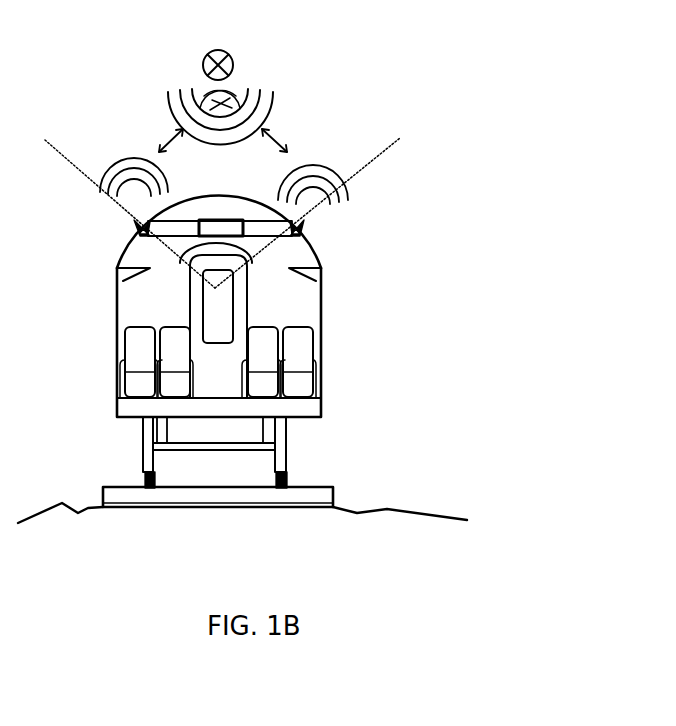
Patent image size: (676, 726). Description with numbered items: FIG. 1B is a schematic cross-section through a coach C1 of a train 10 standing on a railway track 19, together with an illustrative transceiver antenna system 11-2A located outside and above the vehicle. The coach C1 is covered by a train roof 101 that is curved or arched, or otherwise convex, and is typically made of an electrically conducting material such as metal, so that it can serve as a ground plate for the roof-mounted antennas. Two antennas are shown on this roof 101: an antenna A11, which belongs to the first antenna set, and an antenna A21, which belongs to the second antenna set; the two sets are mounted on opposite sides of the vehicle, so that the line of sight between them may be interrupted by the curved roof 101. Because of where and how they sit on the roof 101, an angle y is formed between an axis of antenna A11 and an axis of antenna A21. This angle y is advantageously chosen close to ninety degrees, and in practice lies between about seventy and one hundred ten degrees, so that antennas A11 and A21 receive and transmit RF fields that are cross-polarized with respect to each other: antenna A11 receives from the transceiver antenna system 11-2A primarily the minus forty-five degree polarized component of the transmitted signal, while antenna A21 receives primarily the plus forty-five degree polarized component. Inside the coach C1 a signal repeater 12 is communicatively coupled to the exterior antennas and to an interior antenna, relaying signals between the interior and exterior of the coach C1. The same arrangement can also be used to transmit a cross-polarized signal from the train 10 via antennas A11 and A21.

The transceiver antenna system 11-2A is at (232, 60).
The train 10 is at (370, 370).
The train roof 101 is at (196, 199).
The coach C1 is at (113, 331).
The signal repeater 12 is at (203, 223).
The angle y is at (252, 256).
The antenna A11 is at (126, 224).
The antenna A21 is at (296, 222).
The railway track 19 is at (288, 476).